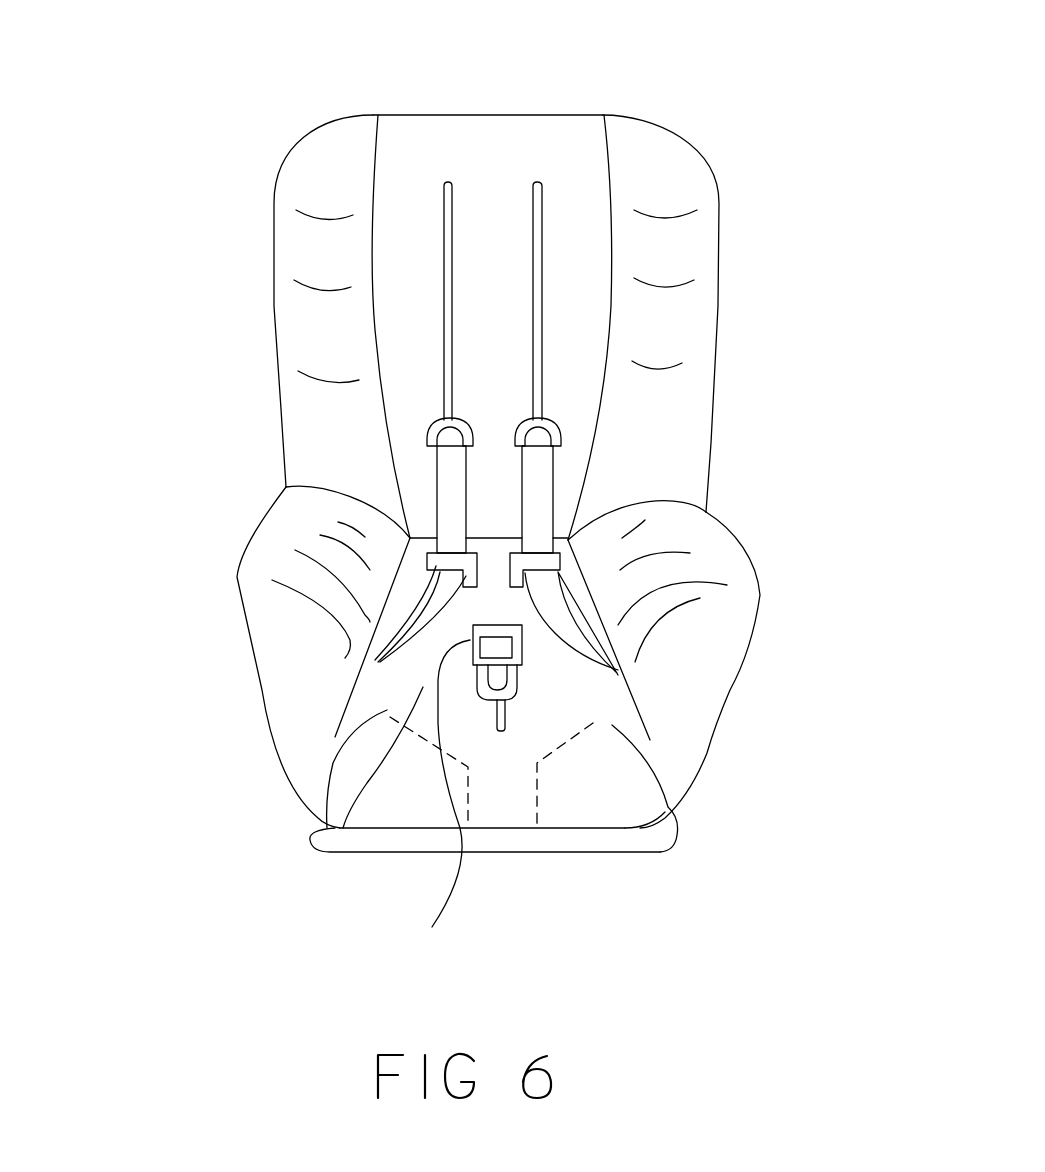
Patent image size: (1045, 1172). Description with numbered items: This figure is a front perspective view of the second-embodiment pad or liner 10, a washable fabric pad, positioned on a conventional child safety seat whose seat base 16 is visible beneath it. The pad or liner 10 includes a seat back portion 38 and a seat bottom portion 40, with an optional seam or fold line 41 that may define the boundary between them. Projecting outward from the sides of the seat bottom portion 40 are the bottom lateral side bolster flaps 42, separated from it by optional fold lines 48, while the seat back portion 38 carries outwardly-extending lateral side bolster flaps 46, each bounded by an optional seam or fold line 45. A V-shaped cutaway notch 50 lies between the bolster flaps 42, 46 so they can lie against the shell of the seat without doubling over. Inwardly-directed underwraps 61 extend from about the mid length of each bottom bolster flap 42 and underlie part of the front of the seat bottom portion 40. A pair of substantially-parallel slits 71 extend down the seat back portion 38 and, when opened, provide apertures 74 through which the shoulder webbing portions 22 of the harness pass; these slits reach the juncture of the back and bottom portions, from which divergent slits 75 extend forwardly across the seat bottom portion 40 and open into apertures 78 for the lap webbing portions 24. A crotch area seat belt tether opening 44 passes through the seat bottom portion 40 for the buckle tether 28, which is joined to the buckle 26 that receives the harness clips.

The pad or liner 10 is at (166, 279).
The seat base 16 is at (655, 838).
The shoulder webbing portions 22 is at (455, 513).
The lap webbing portions 24 is at (384, 628).
The buckle 26 is at (437, 803).
The buckle tether 28 is at (497, 678).
The seat back portion 38 is at (491, 160).
The seat bottom portion 40 is at (386, 712).
The seam or fold line 41 is at (487, 537).
The bottom lateral side bolster flaps 42 is at (290, 637).
The crotch area seat belt tether opening 44 is at (501, 731).
The seam or fold line 45 is at (374, 172).
The lateral side bolster flaps 46 is at (336, 244).
The fold lines 48 is at (392, 585).
The V shaped cutaway notch 50 is at (284, 483).
The underwraps 61 is at (417, 788).
The substantially-parallel slits 71 is at (445, 182).
The apertures 74 is at (448, 420).
The divergent slits 75 is at (398, 618).
The apertures 78 is at (372, 645).